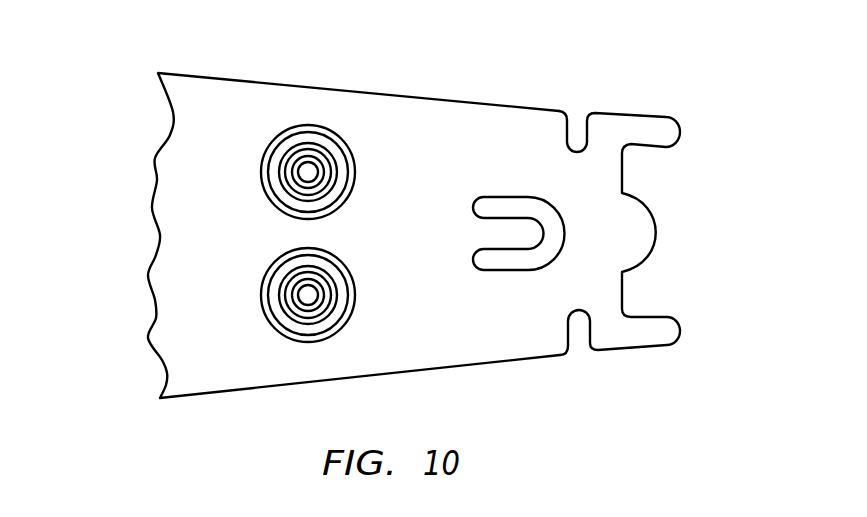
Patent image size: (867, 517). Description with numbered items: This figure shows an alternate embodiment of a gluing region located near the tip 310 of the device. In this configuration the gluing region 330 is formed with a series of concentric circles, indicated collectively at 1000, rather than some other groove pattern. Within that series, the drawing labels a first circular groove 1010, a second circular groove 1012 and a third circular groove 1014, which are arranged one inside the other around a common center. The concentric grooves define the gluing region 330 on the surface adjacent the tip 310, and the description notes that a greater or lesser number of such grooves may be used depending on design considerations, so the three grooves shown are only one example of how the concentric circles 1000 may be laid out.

The series of concentric circles 1000 is at (306, 110).
The first circular groove 1010 is at (310, 156).
The second circular groove 1012 is at (333, 165).
The third circular groove 1014 is at (345, 192).
The gluing region 330 is at (222, 177).
The tip 310 is at (632, 222).